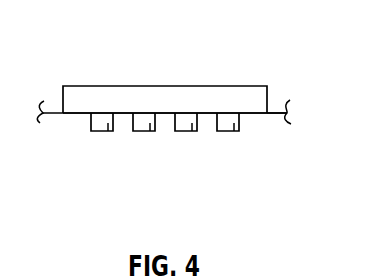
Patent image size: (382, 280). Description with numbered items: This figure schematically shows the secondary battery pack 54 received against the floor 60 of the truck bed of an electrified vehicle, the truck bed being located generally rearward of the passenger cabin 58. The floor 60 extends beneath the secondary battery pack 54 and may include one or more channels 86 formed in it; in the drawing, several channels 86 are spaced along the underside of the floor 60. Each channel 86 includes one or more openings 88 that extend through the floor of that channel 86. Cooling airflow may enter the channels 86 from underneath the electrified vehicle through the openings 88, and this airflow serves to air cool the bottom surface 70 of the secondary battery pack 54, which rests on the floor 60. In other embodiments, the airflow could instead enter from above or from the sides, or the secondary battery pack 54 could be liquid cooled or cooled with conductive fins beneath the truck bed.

The passenger cabin 58 is at (190, 31).
The secondary battery pack 54 is at (200, 99).
The bottom surface 70 is at (118, 113).
The floor 60 is at (275, 115).
The openings 88 is at (101, 131).
The channels 86 is at (108, 131).